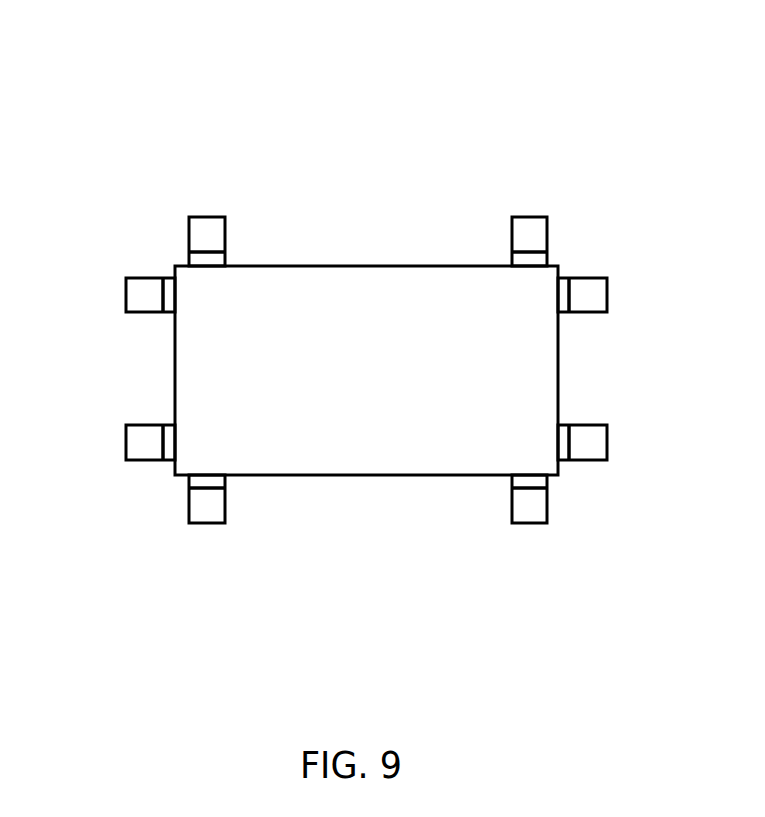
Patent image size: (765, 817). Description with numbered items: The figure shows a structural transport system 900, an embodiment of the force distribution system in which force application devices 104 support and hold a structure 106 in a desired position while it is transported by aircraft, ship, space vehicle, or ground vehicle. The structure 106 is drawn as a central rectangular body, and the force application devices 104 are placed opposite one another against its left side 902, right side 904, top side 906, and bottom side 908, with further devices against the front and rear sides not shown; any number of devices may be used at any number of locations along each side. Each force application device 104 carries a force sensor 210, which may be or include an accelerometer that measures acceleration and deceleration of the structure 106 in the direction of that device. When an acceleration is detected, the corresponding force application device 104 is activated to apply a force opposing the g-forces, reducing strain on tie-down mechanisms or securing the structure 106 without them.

The structural transport system 900 is at (594, 34).
The structure 106 is at (383, 379).
The force application device 104 is at (217, 225).
The force sensor 210 is at (169, 283).
The left side 902 is at (174, 366).
The right side 904 is at (559, 371).
The top side 906 is at (373, 265).
The bottom side 908 is at (365, 476).